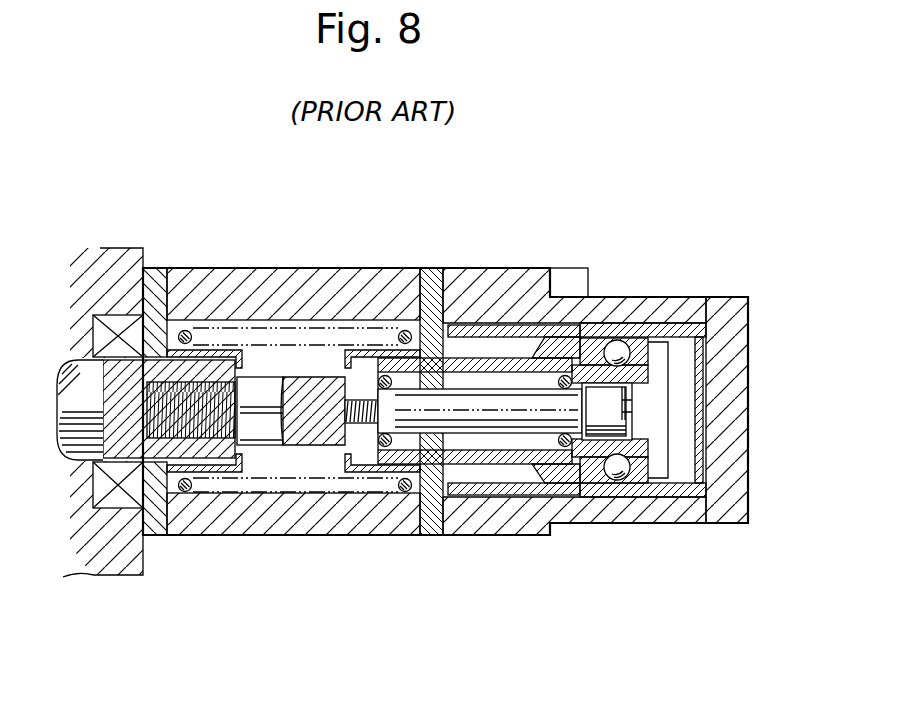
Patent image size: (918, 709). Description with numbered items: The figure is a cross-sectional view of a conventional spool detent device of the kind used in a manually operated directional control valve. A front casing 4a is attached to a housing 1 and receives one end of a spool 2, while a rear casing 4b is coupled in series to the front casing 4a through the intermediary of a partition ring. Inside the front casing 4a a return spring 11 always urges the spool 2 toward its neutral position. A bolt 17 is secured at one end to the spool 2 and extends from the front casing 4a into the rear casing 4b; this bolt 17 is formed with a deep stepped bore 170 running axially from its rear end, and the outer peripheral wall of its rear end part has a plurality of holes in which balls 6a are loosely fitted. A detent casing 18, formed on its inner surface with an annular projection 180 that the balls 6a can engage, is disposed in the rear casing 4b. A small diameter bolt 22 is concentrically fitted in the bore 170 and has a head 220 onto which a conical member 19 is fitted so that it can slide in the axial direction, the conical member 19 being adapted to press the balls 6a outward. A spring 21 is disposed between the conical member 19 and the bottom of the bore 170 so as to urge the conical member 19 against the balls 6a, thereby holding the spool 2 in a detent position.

The housing 1 is at (132, 252).
The spool 2 is at (157, 355).
The front casing 4a is at (273, 278).
The rear casing 4b is at (537, 275).
The return spring 11 is at (410, 333).
The bolt 17 is at (300, 446).
The deep stepped bore 170 is at (427, 443).
The detent casing 18 is at (600, 330).
The conical member 19 is at (658, 333).
The spring 21 is at (522, 337).
The small diameter bolt 22 is at (490, 419).
The annular projection 180 is at (550, 478).
The head 220 is at (620, 400).
The balls 6a is at (617, 353).